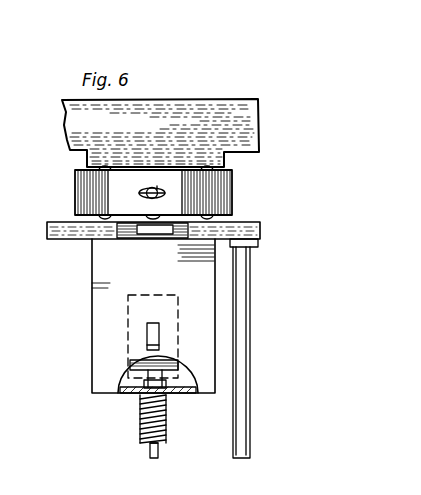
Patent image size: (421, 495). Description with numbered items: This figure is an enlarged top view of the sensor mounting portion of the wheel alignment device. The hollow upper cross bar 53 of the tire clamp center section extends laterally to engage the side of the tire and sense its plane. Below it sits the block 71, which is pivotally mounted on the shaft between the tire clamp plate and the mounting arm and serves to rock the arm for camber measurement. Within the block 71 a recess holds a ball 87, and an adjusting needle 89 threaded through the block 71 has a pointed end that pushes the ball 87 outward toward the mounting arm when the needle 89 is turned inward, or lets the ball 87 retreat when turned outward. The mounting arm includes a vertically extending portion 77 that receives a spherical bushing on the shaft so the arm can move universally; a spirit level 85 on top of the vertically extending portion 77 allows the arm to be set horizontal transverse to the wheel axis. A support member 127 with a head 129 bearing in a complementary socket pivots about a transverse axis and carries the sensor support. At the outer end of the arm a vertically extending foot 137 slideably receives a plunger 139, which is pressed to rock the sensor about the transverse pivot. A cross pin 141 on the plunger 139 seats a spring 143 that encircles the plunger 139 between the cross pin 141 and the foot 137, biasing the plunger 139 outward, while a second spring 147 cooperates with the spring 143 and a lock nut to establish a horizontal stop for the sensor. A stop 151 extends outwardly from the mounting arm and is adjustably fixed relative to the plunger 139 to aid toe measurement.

The upper cross bar 53 is at (240, 112).
The block 71 is at (218, 176).
The ball 87 is at (152, 215).
The adjusting needle 89 is at (157, 188).
The vertically extending portion 77 is at (248, 232).
The spirit level 85 is at (127, 232).
The stop 151 is at (243, 321).
The support member 127 is at (154, 320).
The head 129 is at (146, 338).
The spring 147 is at (146, 386).
The foot 137 is at (130, 396).
The spring 143 is at (168, 420).
The cross pin 141 is at (150, 446).
The plunger 139 is at (152, 453).